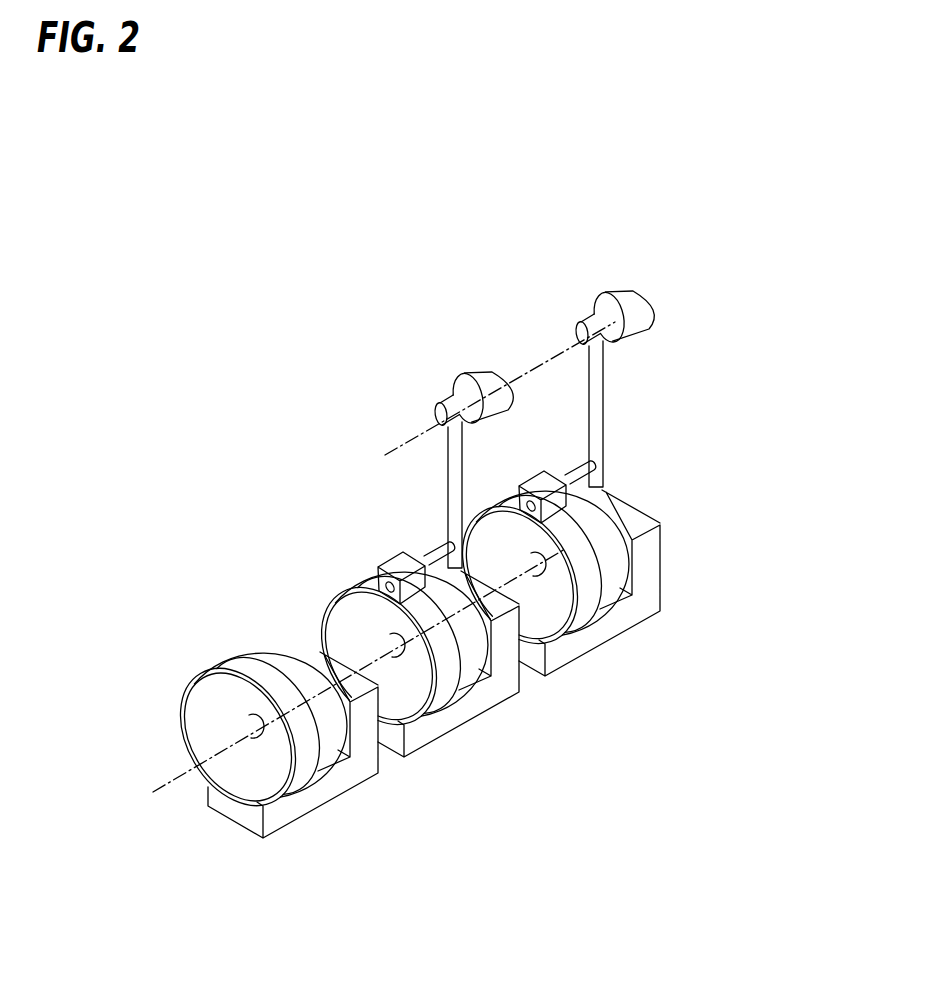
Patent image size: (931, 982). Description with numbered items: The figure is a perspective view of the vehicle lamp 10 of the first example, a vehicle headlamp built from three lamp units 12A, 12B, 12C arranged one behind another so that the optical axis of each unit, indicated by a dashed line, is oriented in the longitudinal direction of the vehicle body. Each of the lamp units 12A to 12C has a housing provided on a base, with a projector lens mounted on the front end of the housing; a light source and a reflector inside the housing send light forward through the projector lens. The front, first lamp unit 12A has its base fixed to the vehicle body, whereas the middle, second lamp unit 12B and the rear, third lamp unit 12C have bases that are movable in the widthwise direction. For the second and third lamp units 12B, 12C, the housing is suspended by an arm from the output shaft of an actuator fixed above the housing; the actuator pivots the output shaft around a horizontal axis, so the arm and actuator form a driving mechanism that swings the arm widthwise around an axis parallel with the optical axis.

The vehicle lamp 10 is at (274, 531).
The first lamp unit 12A is at (249, 744).
The second lamp unit 12B is at (389, 559).
The third lamp unit 12C is at (589, 476).